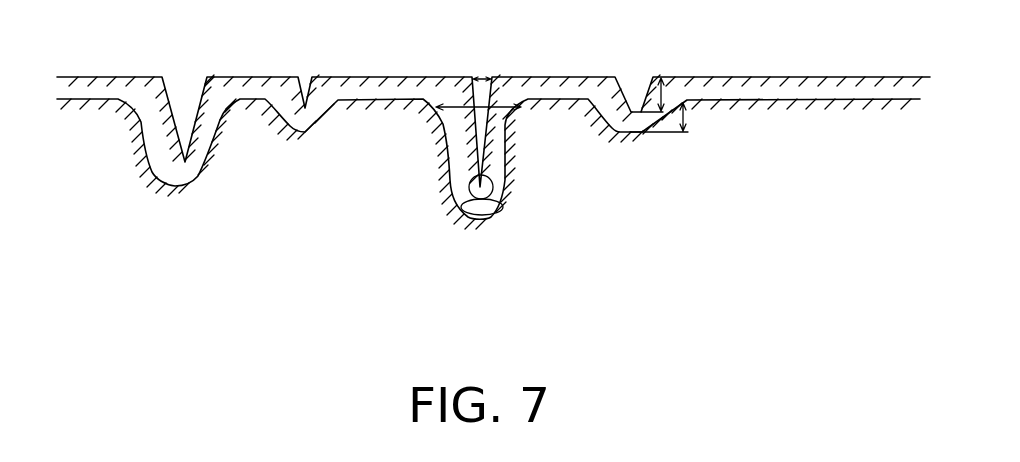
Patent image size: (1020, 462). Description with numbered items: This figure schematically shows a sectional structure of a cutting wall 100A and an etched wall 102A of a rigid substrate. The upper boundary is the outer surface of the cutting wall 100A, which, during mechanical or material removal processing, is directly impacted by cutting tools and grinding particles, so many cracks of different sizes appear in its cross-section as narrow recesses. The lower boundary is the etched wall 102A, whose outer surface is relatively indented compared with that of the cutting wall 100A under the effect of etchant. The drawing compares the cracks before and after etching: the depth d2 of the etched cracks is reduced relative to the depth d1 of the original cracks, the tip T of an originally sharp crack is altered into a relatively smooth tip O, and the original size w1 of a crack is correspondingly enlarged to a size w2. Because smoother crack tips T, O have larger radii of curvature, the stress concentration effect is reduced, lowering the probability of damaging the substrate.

The cutting wall 100A is at (853, 77).
The etched wall 102A is at (857, 118).
The original size of the cracks w1 is at (481, 76).
The size of the cracks w2 is at (474, 96).
The depth of the cracks d1 is at (662, 97).
The depth of the cracks d2 is at (688, 104).
The tip of an originally sharp crack T is at (501, 190).
The tip of the cracks O is at (492, 226).